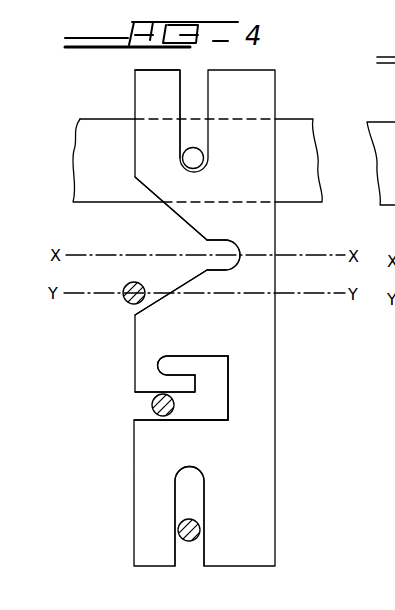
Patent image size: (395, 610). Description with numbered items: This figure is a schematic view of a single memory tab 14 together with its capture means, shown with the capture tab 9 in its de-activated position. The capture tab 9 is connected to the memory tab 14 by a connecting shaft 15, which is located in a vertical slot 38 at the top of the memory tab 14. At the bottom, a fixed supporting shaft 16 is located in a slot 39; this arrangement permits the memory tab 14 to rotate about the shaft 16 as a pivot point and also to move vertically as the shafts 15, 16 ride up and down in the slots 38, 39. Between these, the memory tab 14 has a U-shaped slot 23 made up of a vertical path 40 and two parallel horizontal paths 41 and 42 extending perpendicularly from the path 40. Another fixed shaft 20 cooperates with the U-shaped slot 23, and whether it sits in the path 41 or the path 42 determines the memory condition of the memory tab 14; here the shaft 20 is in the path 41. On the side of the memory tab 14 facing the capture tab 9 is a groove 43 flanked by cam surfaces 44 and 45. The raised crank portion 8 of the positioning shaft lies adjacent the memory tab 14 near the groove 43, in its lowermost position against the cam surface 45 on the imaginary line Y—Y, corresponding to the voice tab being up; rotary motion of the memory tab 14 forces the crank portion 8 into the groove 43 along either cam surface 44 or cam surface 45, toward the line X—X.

The memory tab 14 is at (255, 88).
The vertical slot 38 is at (191, 80).
The capture tab 9 is at (292, 135).
The connecting shaft 15 is at (190, 162).
The cam surface 44 is at (175, 217).
The groove 43 is at (228, 256).
The cam surface 45 is at (178, 292).
The crank portion 8 is at (126, 301).
The horizontal path 42 is at (172, 363).
The U-shaped slot 23 is at (228, 387).
The vertical path 40 is at (215, 408).
The fixed shaft 20 is at (151, 405).
The horizontal path 41 is at (182, 413).
The slot 39 is at (193, 488).
The fixed shaft 16 is at (178, 530).